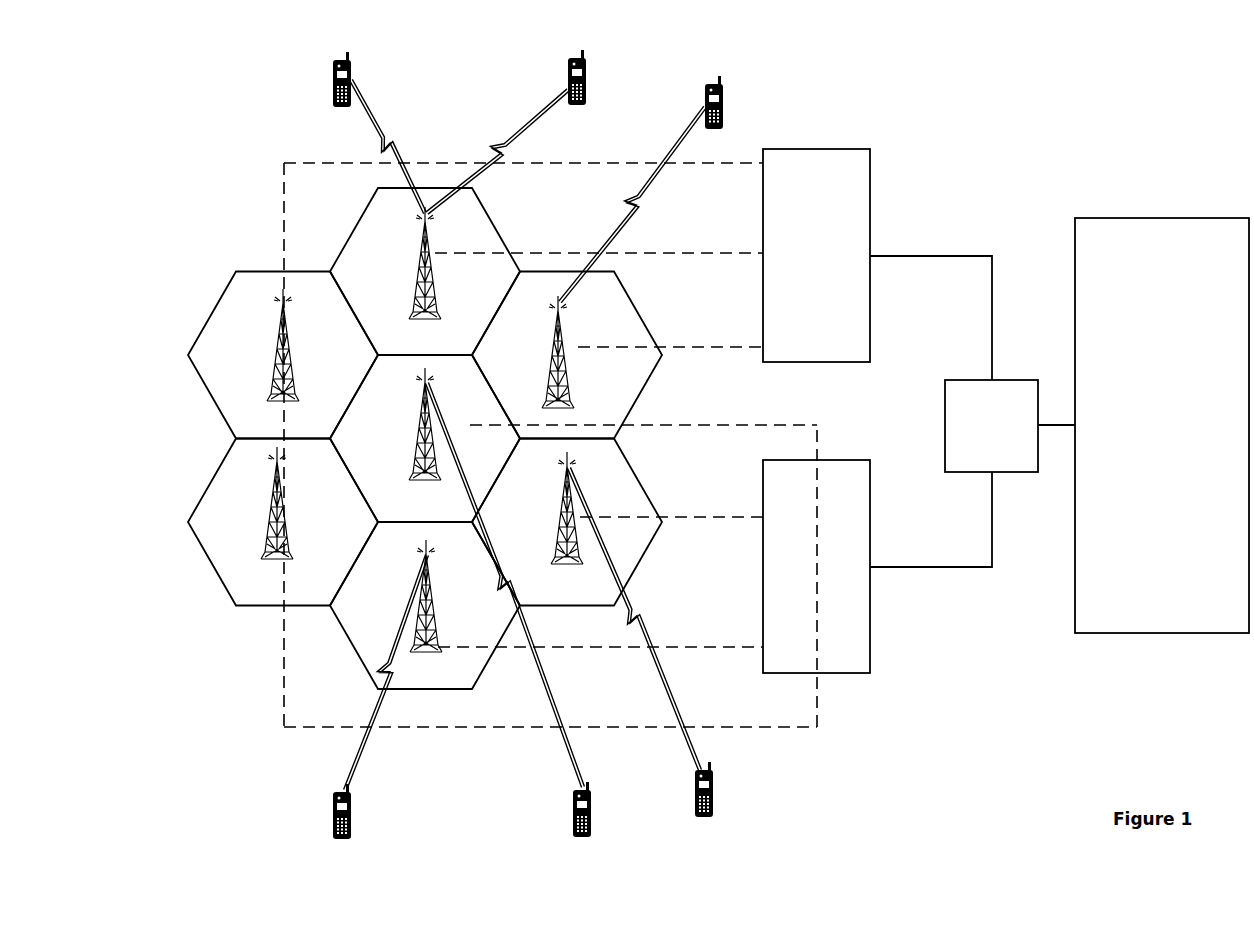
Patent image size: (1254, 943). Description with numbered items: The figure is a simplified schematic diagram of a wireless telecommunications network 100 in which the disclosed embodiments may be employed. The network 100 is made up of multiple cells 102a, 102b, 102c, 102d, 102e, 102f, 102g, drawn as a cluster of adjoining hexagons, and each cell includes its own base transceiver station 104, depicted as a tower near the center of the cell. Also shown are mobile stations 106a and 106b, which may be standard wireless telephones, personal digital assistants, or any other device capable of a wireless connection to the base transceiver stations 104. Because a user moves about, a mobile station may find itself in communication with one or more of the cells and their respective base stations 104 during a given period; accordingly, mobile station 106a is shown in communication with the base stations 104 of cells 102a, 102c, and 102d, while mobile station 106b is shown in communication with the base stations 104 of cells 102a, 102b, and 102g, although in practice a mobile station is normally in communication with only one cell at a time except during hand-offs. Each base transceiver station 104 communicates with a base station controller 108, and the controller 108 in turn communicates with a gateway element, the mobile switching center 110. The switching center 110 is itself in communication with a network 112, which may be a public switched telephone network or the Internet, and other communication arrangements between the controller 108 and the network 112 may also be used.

The wireless telecommunications network 100 is at (230, 712).
The cell 102a is at (488, 214).
The cell 102b is at (632, 302).
The cell 102c is at (632, 472).
The cell 102d is at (488, 664).
The cell 102e is at (236, 607).
The cell 102f is at (250, 271).
The cell 102g is at (425, 438).
The base transceiver station 104 is at (433, 273).
The mobile station 106a is at (587, 70).
The mobile station 106b is at (331, 78).
The base station controller 108 is at (820, 149).
The mobile switching center 110 is at (945, 427).
The network 112 is at (1165, 218).